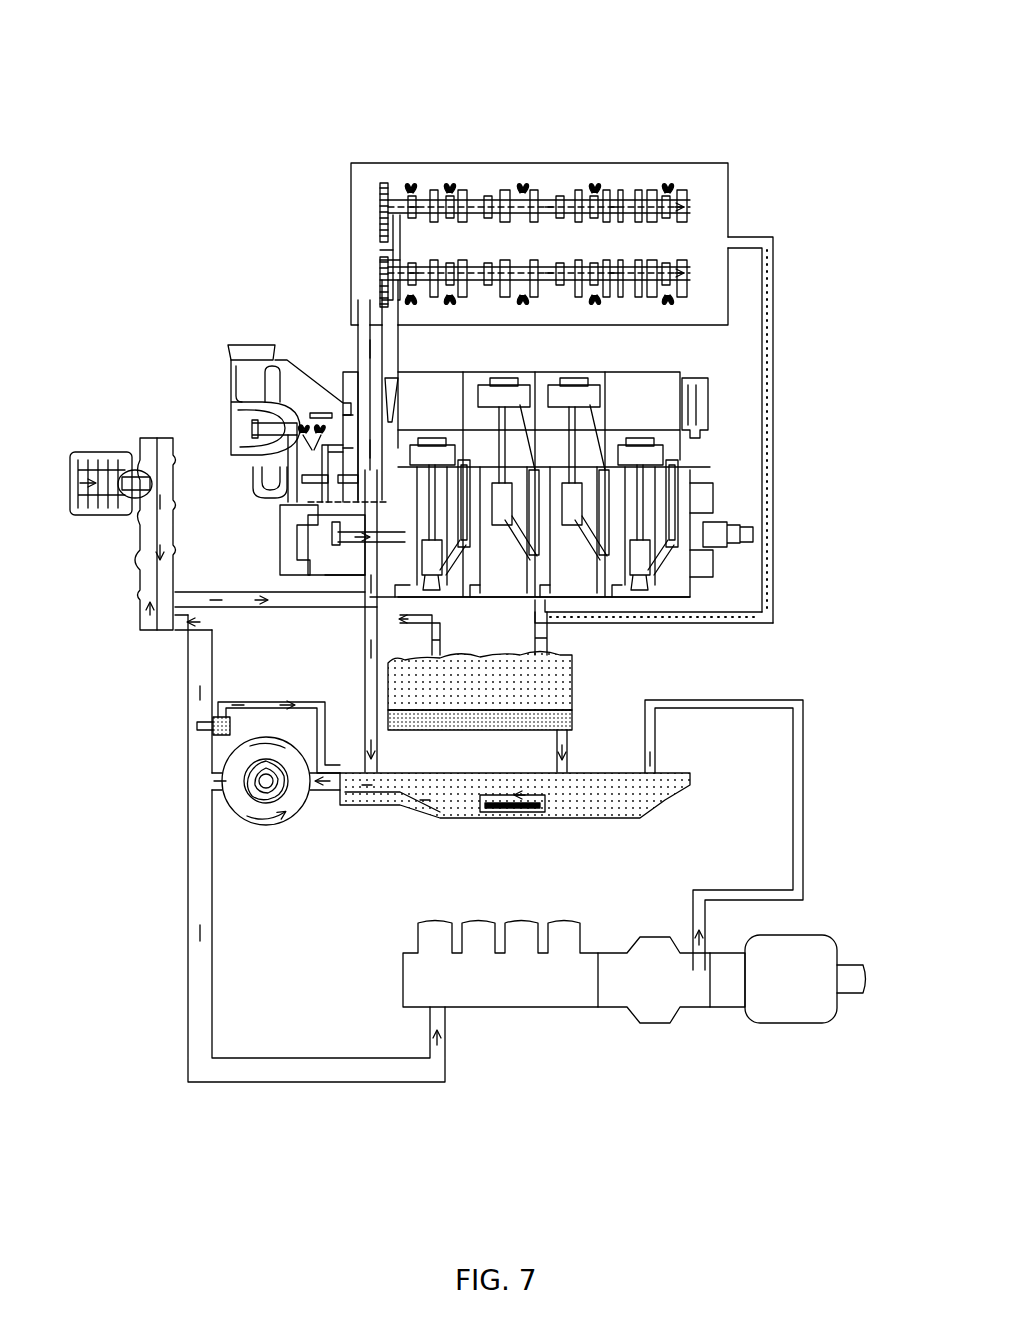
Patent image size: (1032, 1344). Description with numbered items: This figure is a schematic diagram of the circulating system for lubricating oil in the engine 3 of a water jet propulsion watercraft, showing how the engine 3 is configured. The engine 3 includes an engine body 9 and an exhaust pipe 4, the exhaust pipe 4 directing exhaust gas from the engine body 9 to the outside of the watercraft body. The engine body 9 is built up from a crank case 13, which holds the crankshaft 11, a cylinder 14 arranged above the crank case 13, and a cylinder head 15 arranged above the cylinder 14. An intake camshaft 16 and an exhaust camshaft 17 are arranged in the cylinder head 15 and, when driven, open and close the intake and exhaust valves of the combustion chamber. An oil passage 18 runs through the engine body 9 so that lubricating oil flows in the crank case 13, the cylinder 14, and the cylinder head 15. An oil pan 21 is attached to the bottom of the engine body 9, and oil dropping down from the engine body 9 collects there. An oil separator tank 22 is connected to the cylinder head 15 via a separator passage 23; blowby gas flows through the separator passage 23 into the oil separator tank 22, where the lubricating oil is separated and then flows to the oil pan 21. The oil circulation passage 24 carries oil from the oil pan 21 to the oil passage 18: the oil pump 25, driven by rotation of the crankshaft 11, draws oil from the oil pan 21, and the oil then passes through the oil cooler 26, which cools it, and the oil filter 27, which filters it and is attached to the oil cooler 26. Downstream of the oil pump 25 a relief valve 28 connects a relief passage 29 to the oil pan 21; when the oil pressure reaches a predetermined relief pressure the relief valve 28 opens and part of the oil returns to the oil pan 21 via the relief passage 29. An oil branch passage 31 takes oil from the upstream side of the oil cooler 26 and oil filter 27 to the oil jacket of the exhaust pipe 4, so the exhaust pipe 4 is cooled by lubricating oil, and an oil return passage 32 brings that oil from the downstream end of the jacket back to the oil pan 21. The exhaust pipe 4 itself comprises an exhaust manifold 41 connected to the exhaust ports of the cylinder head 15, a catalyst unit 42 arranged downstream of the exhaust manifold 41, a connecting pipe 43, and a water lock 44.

The engine 3 is at (768, 98).
The exhaust pipe 4 is at (592, 1032).
The engine body 9 is at (298, 256).
The crankshaft 11 is at (718, 522).
The crank case 13 is at (705, 495).
The cylinder 14 is at (705, 405).
The cylinder head 15 is at (735, 290).
The intake camshaft 16 is at (560, 190).
The exhaust camshaft 17 is at (493, 275).
The oil passage 18 is at (580, 600).
The oil pan 21 is at (405, 805).
The oil separator tank 22 is at (568, 700).
The separator passage 23 is at (742, 620).
The oil circulation passage 24 is at (176, 654).
The oil pump 25 is at (268, 824).
The oil cooler 26 is at (138, 588).
The oil filter 27 is at (104, 450).
The relief valve 28 is at (248, 720).
The relief passage 29 is at (315, 700).
The oil branch passage 31 is at (185, 903).
The oil return passage 32 is at (793, 818).
The exhaust manifold 41 is at (483, 1003).
The catalyst unit 42 is at (653, 1020).
The connecting pipe 43 is at (727, 1005).
The water lock 44 is at (795, 1020).